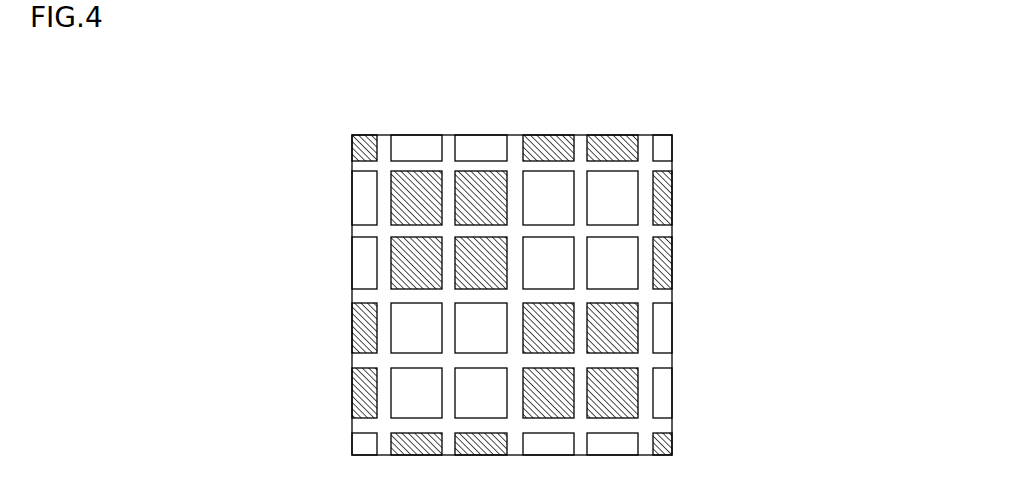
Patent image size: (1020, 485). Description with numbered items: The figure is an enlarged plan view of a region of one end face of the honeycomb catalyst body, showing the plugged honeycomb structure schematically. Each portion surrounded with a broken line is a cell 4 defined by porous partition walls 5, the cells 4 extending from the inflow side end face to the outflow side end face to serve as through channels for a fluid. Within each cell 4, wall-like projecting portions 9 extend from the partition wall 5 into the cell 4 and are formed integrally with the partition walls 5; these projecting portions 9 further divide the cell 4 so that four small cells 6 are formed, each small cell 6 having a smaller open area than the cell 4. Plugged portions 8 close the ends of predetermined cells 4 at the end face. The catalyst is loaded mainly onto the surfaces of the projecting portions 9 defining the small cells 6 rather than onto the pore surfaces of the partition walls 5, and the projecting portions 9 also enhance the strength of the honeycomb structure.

The cell 4 is at (681, 263).
The partition wall 5 is at (382, 332).
The small cell 6 is at (548, 198).
The plugged portion 8 is at (313, 227).
The projecting portion 9 is at (615, 179).